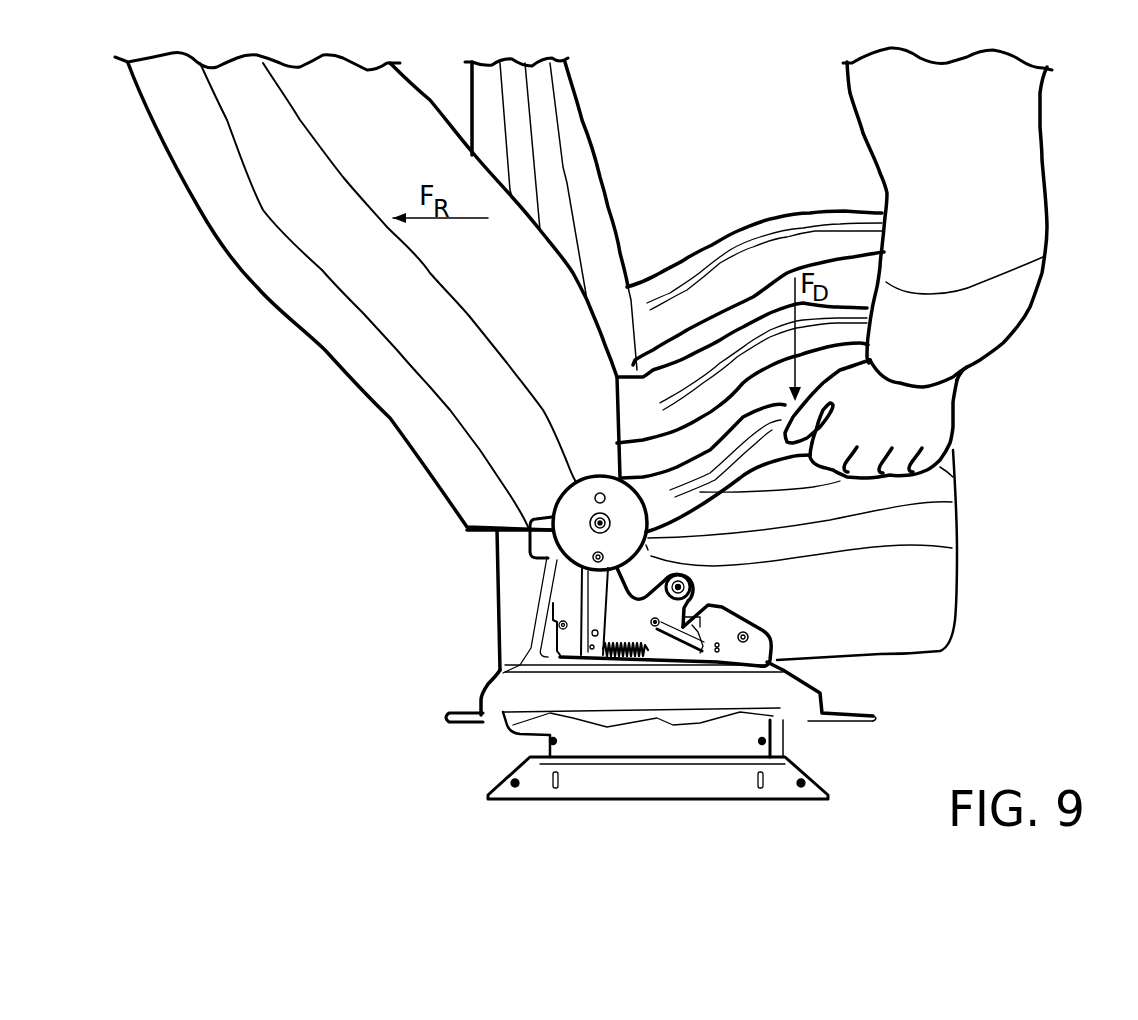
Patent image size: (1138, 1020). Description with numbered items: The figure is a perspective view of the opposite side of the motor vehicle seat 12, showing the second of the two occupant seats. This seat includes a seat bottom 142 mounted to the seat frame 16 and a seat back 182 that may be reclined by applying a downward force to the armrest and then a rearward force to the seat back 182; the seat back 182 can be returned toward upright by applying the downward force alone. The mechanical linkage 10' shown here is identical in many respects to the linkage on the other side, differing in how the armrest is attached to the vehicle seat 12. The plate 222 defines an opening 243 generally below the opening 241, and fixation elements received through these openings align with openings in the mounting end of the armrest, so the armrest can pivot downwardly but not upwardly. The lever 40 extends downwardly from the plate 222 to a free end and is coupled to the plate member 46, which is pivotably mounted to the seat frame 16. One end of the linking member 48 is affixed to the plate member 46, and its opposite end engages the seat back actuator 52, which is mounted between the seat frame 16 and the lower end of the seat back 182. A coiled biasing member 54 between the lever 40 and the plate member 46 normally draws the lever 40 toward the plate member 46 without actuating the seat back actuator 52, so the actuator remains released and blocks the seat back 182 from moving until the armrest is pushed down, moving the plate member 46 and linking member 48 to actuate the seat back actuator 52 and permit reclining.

The motor vehicle seat 12 is at (338, 483).
The seat back 182 is at (320, 352).
The plate 222 is at (522, 530).
The opening 241 is at (597, 521).
The opening 243 is at (648, 549).
The seat bottom 142 is at (955, 590).
The mechanical linkage 10' is at (479, 622).
The lever 40 is at (581, 604).
The linking member 48 is at (719, 621).
The seat back actuator 52 is at (722, 623).
The biasing member 54 is at (632, 660).
The plate member 46 is at (677, 666).
The seat frame 16 is at (803, 676).